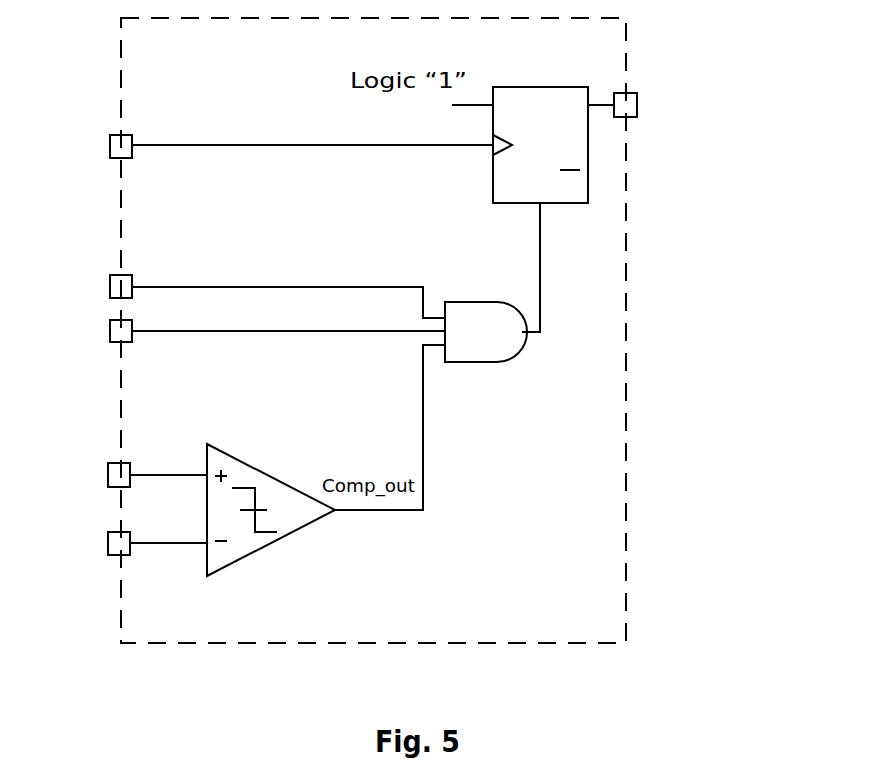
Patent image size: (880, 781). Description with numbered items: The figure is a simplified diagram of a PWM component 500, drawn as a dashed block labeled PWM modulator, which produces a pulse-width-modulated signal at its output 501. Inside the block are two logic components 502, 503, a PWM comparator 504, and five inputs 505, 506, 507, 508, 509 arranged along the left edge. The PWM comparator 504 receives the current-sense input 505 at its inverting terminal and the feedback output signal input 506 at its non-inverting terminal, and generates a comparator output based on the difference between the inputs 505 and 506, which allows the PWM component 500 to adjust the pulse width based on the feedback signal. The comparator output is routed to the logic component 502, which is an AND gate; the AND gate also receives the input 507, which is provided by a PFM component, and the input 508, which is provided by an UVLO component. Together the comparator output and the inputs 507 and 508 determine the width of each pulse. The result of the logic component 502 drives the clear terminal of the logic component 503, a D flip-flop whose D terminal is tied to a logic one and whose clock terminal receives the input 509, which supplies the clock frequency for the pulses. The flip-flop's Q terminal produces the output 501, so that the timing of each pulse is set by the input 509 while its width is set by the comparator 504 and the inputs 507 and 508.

The PWM component 500 is at (665, 603).
The output 501 is at (658, 62).
The logic component 502 is at (488, 363).
The logic component 503 is at (577, 204).
The PWM comparator 504 is at (233, 453).
The input 505 is at (108, 557).
The input 506 is at (108, 466).
The input 507 is at (110, 344).
The input 508 is at (110, 276).
The input 509 is at (110, 160).